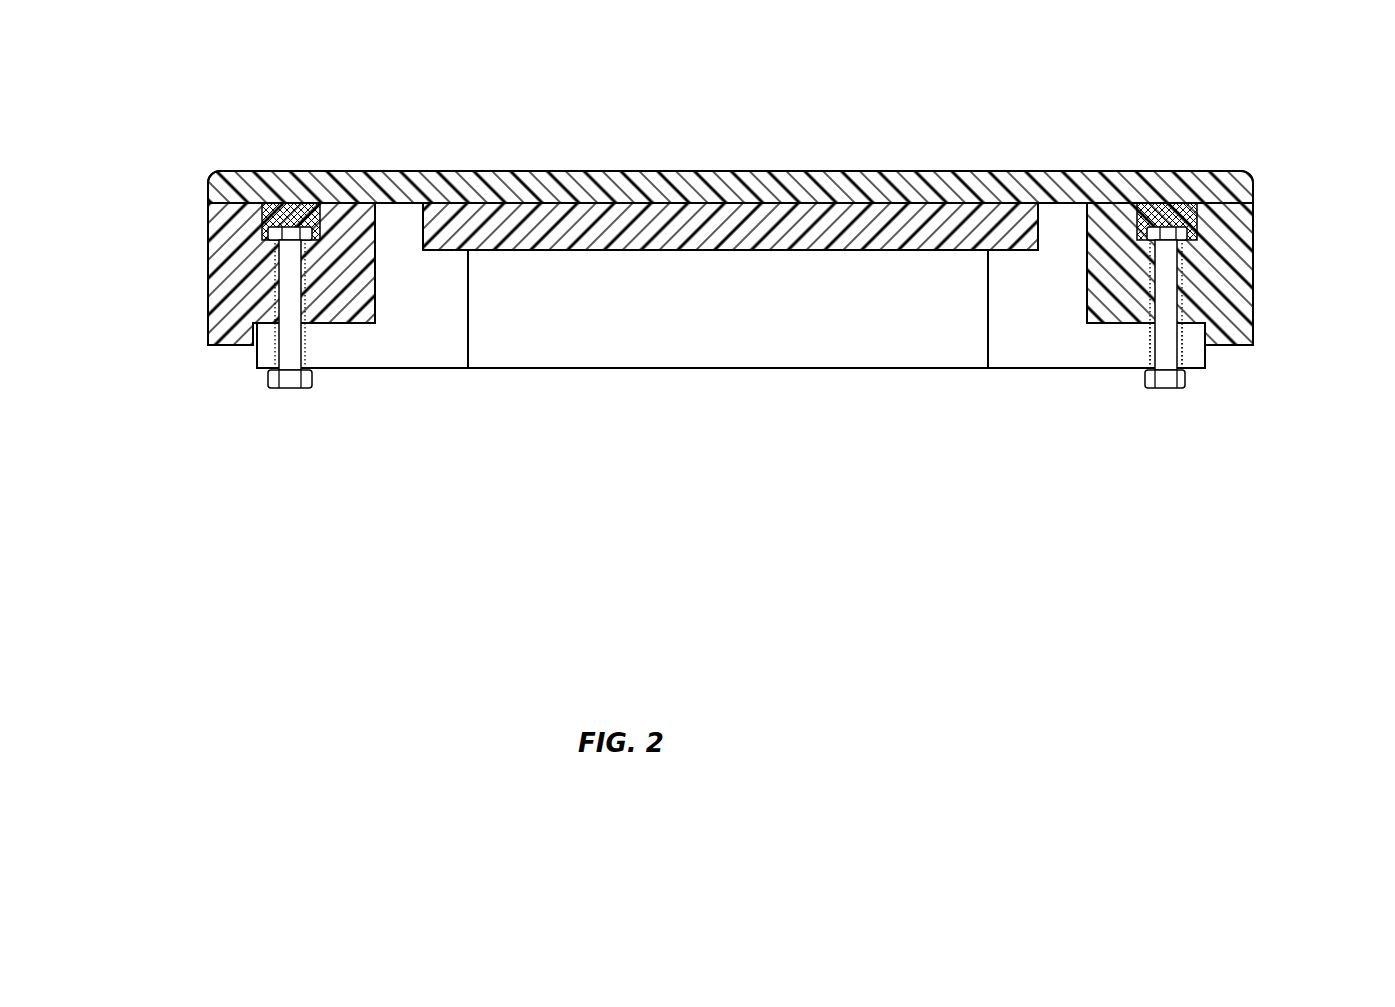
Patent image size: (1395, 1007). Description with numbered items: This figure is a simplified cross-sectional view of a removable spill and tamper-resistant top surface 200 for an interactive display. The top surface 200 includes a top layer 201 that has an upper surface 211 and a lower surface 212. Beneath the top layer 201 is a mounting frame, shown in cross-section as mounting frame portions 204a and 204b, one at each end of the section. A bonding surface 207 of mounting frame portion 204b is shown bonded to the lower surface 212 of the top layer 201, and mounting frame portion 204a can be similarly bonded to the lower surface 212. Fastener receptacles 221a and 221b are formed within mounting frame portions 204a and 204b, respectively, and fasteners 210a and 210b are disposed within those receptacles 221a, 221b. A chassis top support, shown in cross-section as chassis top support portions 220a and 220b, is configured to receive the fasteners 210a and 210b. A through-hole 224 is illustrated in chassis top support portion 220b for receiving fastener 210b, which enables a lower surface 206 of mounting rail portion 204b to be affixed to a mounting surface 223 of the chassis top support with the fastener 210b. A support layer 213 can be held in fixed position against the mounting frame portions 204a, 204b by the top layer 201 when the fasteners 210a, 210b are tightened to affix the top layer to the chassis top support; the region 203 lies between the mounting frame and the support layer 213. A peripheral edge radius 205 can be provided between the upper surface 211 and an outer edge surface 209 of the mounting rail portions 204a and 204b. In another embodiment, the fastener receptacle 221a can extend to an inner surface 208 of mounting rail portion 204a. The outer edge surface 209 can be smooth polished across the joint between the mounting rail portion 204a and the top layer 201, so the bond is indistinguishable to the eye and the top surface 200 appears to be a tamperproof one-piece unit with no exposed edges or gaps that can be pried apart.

The top surface 200 is at (580, 519).
The top layer 201 is at (498, 180).
The recess 203 is at (1065, 220).
The mounting frame portion 204a is at (220, 290).
The mounting frame portion 204b is at (1243, 303).
The peripheral edge radius 205 is at (210, 177).
The lower surface 206 is at (1242, 343).
The bonding surface 207 is at (1245, 203).
The inner surface 208 is at (377, 282).
The outer edge surface 209 is at (210, 317).
The fastener 210a is at (297, 388).
The fastener 210b is at (1160, 388).
The upper surface 211 is at (418, 172).
The lower surface 212 is at (630, 200).
The support layer 213 is at (657, 222).
The chassis top support portion 220a is at (363, 353).
The chassis top support portion 220b is at (1010, 350).
The fastener receptacle 221a is at (210, 215).
The fastener receptacle 221b is at (1197, 225).
The mounting surface 223 is at (1187, 327).
The through-hole 224 is at (1152, 338).